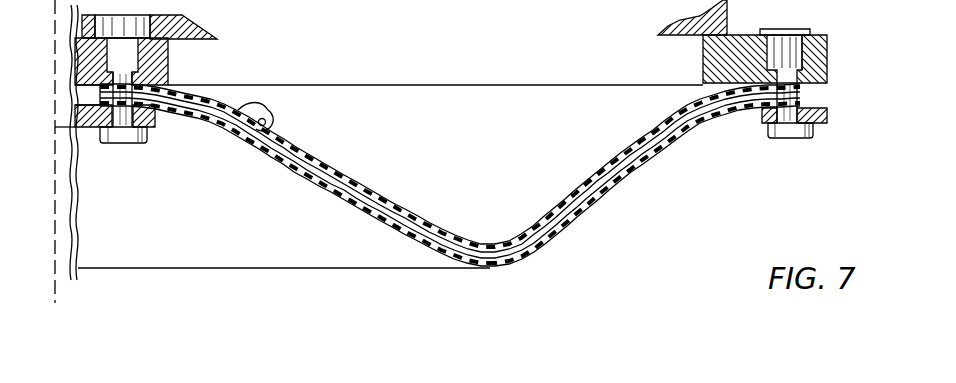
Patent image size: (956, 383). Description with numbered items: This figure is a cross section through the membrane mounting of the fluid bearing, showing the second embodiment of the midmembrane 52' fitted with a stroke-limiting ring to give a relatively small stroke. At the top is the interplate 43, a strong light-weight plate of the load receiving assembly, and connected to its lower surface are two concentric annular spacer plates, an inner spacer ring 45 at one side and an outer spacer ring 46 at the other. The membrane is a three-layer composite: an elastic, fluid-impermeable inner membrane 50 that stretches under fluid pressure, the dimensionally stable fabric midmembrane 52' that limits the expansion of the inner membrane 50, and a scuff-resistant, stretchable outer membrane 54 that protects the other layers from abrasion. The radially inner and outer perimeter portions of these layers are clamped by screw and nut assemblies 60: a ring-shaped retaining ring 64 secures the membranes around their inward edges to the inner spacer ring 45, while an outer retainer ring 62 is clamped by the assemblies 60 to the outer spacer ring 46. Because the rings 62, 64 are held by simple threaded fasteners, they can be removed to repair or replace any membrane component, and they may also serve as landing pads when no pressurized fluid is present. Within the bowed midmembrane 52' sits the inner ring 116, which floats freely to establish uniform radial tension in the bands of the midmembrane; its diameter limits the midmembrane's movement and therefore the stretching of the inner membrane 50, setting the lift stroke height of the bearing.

The interplate 43 is at (200, 26).
The inner spacer ring 45 is at (168, 62).
The outer spacer ring 46 is at (813, 50).
The inner membrane 50 is at (382, 197).
The midmembrane 52' is at (644, 184).
The outer membrane 54 is at (360, 212).
The screw and nut assembly 60 is at (148, 138).
The outer retainer ring 62 is at (827, 116).
The retaining ring 64 is at (82, 130).
The inner ring 116 is at (266, 120).